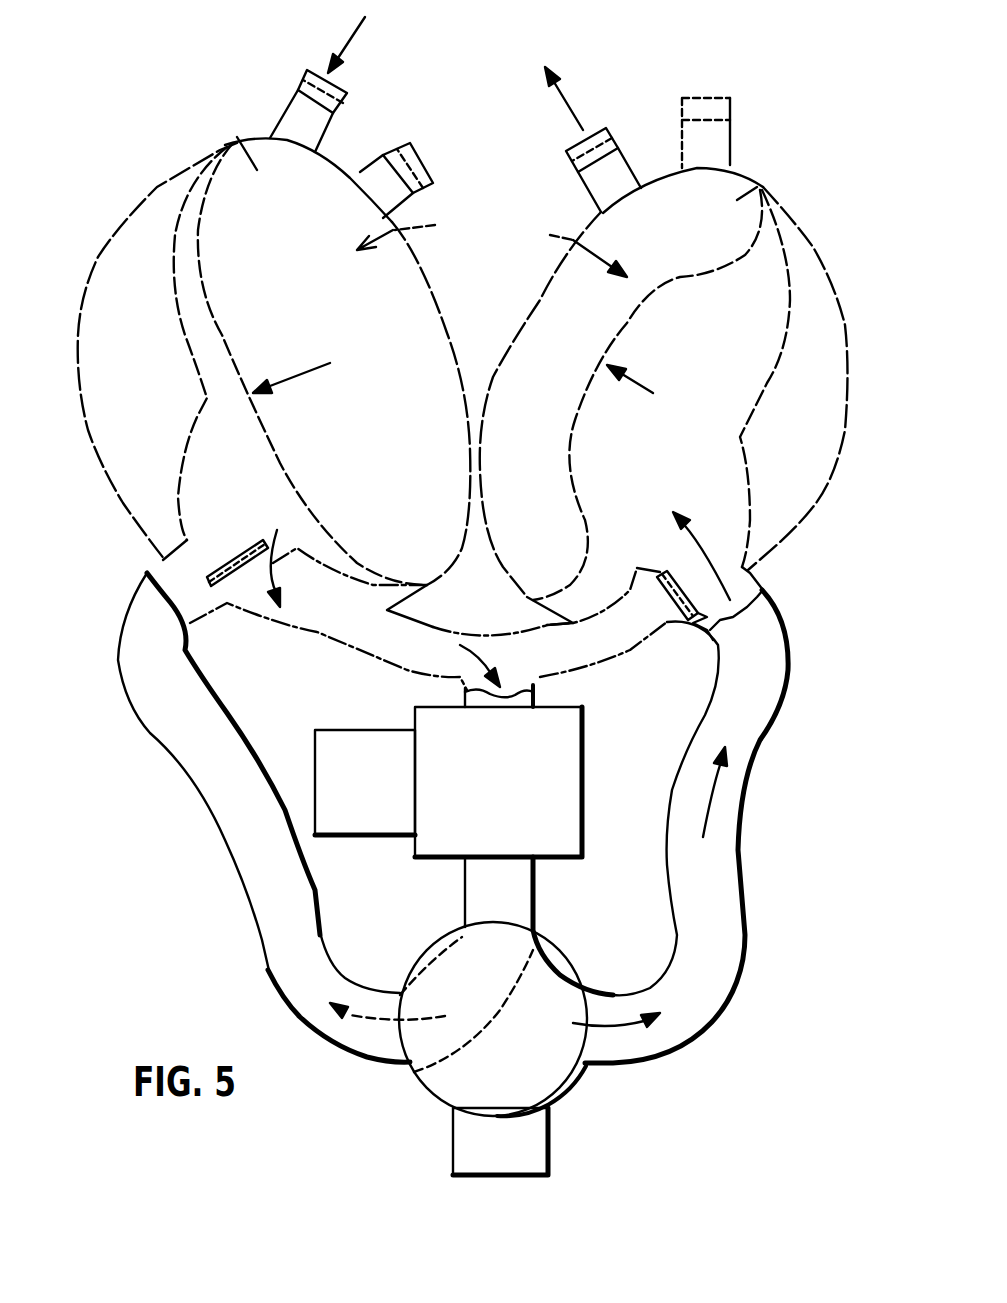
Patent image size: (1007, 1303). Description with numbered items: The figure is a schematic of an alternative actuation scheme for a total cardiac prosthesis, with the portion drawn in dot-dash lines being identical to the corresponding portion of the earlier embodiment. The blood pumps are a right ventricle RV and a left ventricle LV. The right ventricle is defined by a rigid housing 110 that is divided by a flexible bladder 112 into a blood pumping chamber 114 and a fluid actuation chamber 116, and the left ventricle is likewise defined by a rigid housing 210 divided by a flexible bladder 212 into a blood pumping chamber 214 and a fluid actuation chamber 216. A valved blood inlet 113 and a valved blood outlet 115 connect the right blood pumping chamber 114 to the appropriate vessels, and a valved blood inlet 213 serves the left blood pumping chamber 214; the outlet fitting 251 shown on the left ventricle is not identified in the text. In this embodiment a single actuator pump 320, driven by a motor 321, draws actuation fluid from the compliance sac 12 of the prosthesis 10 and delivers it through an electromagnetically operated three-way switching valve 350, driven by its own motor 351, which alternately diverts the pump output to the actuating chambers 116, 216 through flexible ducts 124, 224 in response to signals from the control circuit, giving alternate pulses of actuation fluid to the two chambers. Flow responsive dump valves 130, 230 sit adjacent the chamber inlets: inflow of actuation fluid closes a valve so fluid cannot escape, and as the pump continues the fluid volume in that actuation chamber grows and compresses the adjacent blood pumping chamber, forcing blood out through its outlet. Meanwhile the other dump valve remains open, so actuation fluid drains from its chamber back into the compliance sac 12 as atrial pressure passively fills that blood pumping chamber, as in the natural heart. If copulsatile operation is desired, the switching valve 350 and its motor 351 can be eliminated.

The artificial heart housing 10 is at (483, 351).
The compliance sac 12 is at (473, 410).
The rigid housing 110 is at (351, 322).
The flexible bladder 112 is at (312, 364).
The valved blood inlet 113 is at (287, 97).
The blood pumping chamber 114 is at (217, 136).
The valved blood outlet 115 is at (396, 152).
The fluid actuation chamber 116 is at (175, 343).
The flexible duct 124 is at (281, 817).
The flow responsive valve 130 is at (243, 546).
The rigid housing 210 is at (621, 396).
The flexible bladder 212 is at (644, 395).
The valved blood inlet 213 is at (737, 133).
The blood pumping chamber 214 is at (780, 170).
The fluid actuation chamber 216 is at (763, 378).
The flexible duct 224 is at (673, 826).
The flow responsive valve 230 is at (683, 626).
The left ventricle outlet valve 251 is at (580, 139).
The actuator pump 320 is at (527, 806).
The motor 321 is at (365, 758).
The three-way switching valve 350 is at (468, 1019).
The motor 351 is at (461, 1141).